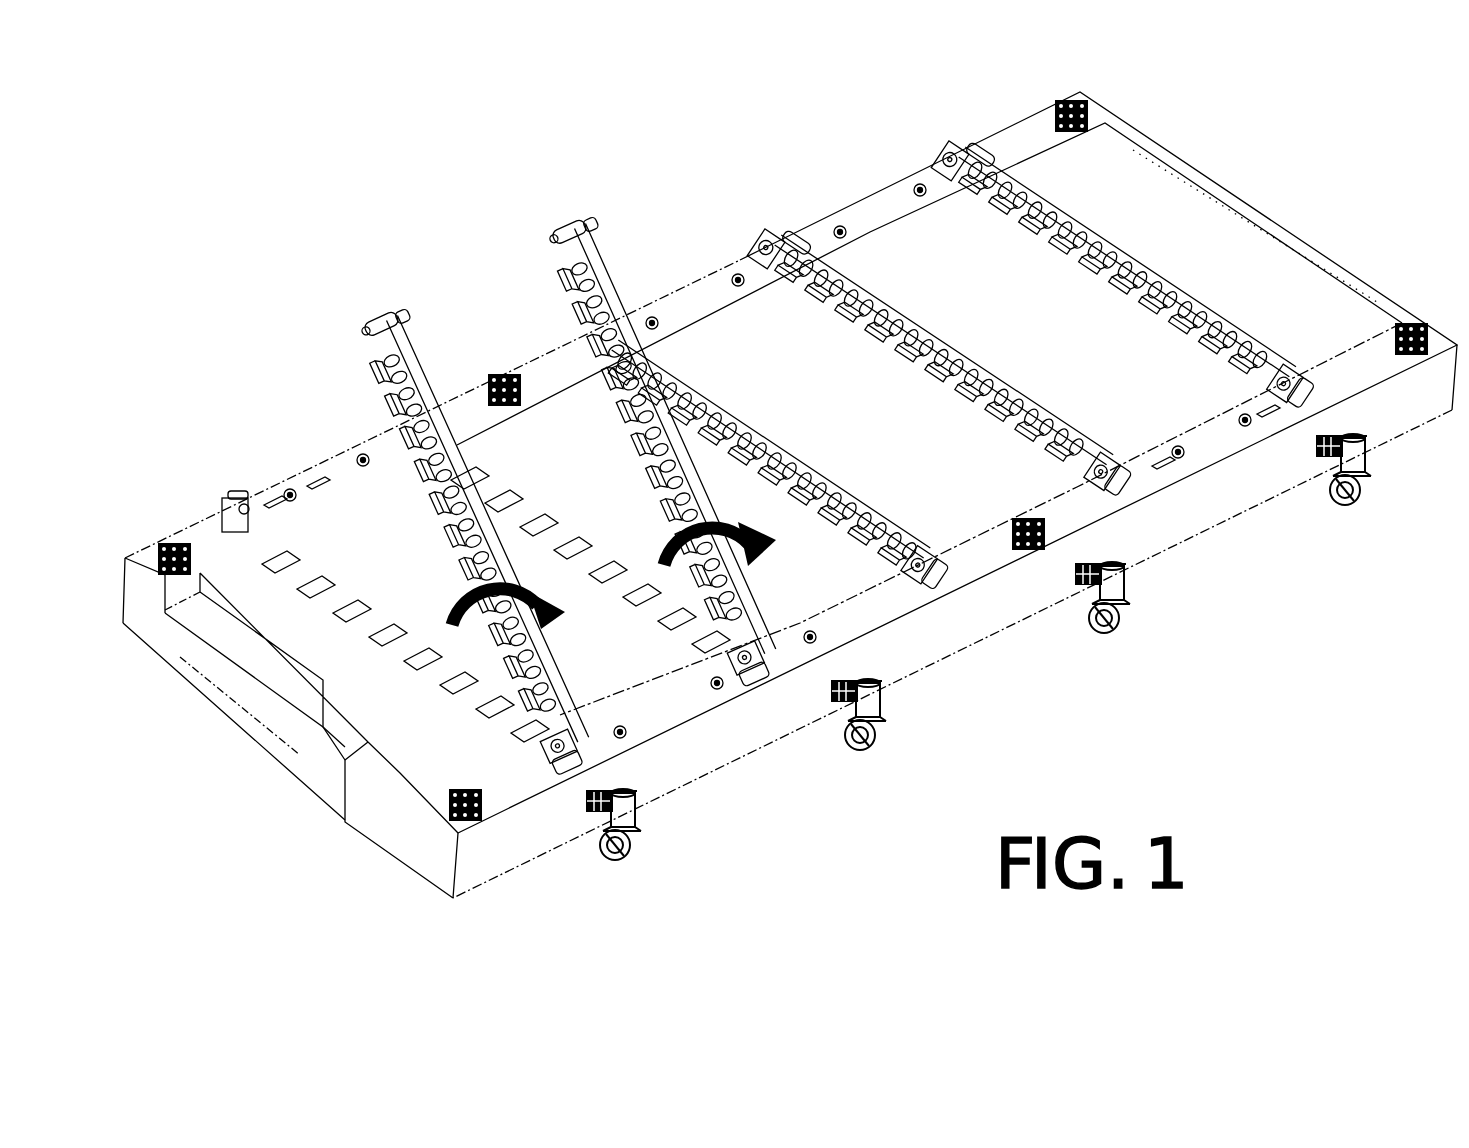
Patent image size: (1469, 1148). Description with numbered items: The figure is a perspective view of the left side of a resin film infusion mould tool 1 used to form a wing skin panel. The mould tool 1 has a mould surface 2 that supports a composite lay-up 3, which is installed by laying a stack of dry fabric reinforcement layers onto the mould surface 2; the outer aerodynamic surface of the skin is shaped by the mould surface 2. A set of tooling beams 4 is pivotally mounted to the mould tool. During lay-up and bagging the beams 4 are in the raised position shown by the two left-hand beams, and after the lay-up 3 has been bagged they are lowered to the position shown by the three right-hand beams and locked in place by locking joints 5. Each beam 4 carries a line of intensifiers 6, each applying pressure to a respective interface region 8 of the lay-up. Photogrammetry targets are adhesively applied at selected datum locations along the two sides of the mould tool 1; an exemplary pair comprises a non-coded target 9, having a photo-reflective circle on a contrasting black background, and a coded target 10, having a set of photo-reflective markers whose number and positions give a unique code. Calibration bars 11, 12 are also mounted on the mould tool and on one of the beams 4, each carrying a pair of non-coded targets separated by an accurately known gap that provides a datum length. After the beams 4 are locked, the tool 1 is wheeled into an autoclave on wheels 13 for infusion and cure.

The resin film infusion mould tool 1 is at (692, 747).
The mould surface 2 is at (220, 638).
The composite lay-up 3 is at (250, 623).
The tooling beam 4 is at (797, 248).
The locking joint 5 is at (232, 496).
The intensifier 6 is at (992, 205).
The interface region 8 is at (355, 612).
The non-coded target 9 is at (890, 600).
The coded target 10 is at (1025, 553).
The calibration bar 11 is at (780, 432).
The calibration bar 12 is at (1200, 439).
The wheel 13 is at (1117, 623).